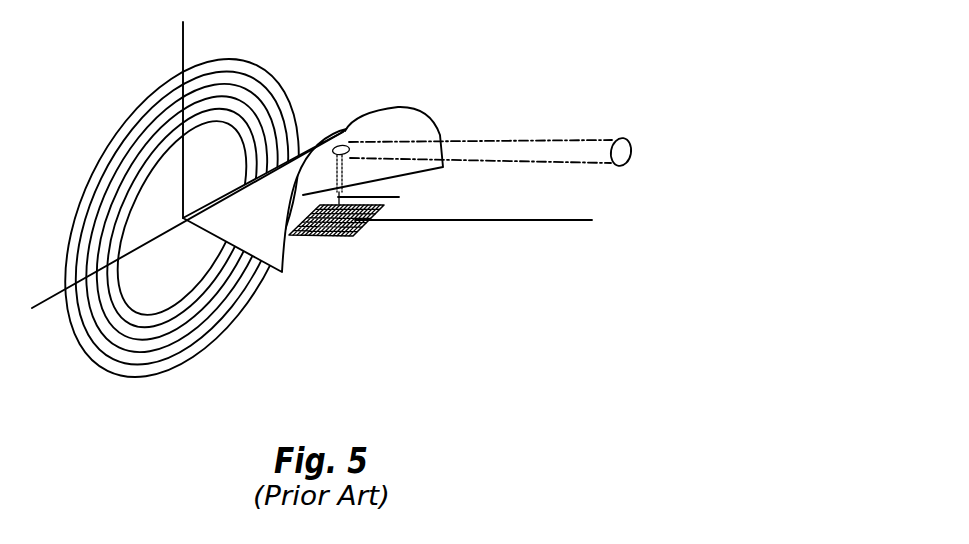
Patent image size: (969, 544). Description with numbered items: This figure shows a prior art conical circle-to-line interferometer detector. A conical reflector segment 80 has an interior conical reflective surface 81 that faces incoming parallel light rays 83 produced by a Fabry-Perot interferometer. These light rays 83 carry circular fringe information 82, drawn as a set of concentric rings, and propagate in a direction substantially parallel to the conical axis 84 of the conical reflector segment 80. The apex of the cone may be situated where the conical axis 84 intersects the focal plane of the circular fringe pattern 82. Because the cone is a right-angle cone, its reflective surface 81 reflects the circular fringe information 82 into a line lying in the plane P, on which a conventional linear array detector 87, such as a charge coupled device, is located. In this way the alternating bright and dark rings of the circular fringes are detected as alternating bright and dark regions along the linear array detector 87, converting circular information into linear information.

The conical reflector segment 80 is at (305, 143).
The interior conical reflective surface 81 is at (411, 118).
The circular fringe information 82 is at (142, 105).
The parallel light rays 83 is at (560, 146).
The conical axis 84 is at (545, 221).
The linear array detector 87 is at (399, 197).
The plane P is at (328, 237).